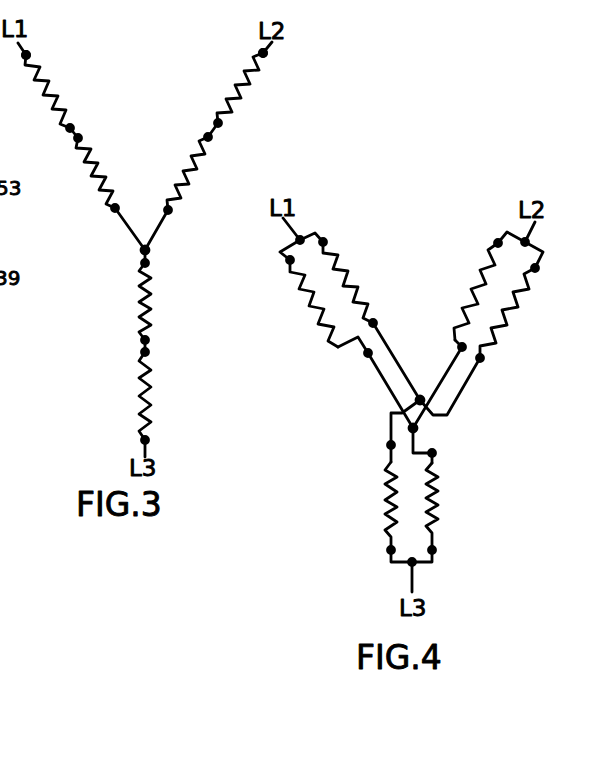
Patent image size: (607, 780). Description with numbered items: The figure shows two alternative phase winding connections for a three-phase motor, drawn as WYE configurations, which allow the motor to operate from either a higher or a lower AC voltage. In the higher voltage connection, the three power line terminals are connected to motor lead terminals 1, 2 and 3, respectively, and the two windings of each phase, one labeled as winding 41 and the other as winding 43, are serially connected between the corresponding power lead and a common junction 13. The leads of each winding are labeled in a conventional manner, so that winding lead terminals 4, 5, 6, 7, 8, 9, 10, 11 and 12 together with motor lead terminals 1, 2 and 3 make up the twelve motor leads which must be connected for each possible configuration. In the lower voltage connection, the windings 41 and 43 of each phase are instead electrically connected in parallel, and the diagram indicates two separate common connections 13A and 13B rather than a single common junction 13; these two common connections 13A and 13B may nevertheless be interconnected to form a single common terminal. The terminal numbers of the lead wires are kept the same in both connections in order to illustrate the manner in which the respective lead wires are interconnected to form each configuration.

In FIG. 3, the motor lead terminal 1 is at (27, 54).
In FIG. 4, the motor lead terminal 1 is at (324, 241).
In FIG. 3, the motor lead terminal 2 is at (262, 52).
In FIG. 4, the motor lead terminal 2 is at (536, 269).
In FIG. 3, the motor lead terminal 3 is at (145, 440).
In FIG. 4, the motor lead terminal 3 is at (389, 551).
In FIG. 3, the winding lead terminal 4 is at (71, 127).
In FIG. 4, the winding lead terminal 4 is at (374, 322).
In FIG. 3, the winding lead terminal 5 is at (218, 123).
In FIG. 4, the winding lead terminal 5 is at (481, 359).
In FIG. 3, the winding lead terminal 6 is at (145, 352).
In FIG. 4, the winding lead terminal 6 is at (390, 445).
In FIG. 3, the winding lead terminal 7 is at (78, 138).
In FIG. 4, the winding lead terminal 7 is at (289, 260).
In FIG. 3, the winding lead terminal 8 is at (208, 137).
In FIG. 4, the winding lead terminal 8 is at (497, 242).
In FIG. 3, the winding lead terminal 9 is at (145, 340).
In FIG. 4, the winding lead terminal 9 is at (433, 550).
In FIG. 3, the winding lead terminal 10 is at (115, 208).
In FIG. 4, the winding lead terminal 10 is at (367, 354).
In FIG. 3, the winding lead terminal 11 is at (168, 210).
In FIG. 4, the winding lead terminal 11 is at (461, 347).
In FIG. 3, the winding lead terminal 12 is at (145, 263).
In FIG. 4, the winding lead terminal 12 is at (433, 453).
In FIG. 3, the common junction 13 is at (145, 250).
In FIG. 4, the common connection 13A is at (420, 399).
In FIG. 4, the common connection 13B is at (414, 428).
In FIG. 3, the winding 41 is at (52, 85).
In FIG. 4, the winding 41 is at (347, 272).
In FIG. 3, the winding 43 is at (104, 167).
In FIG. 4, the winding 43 is at (305, 298).